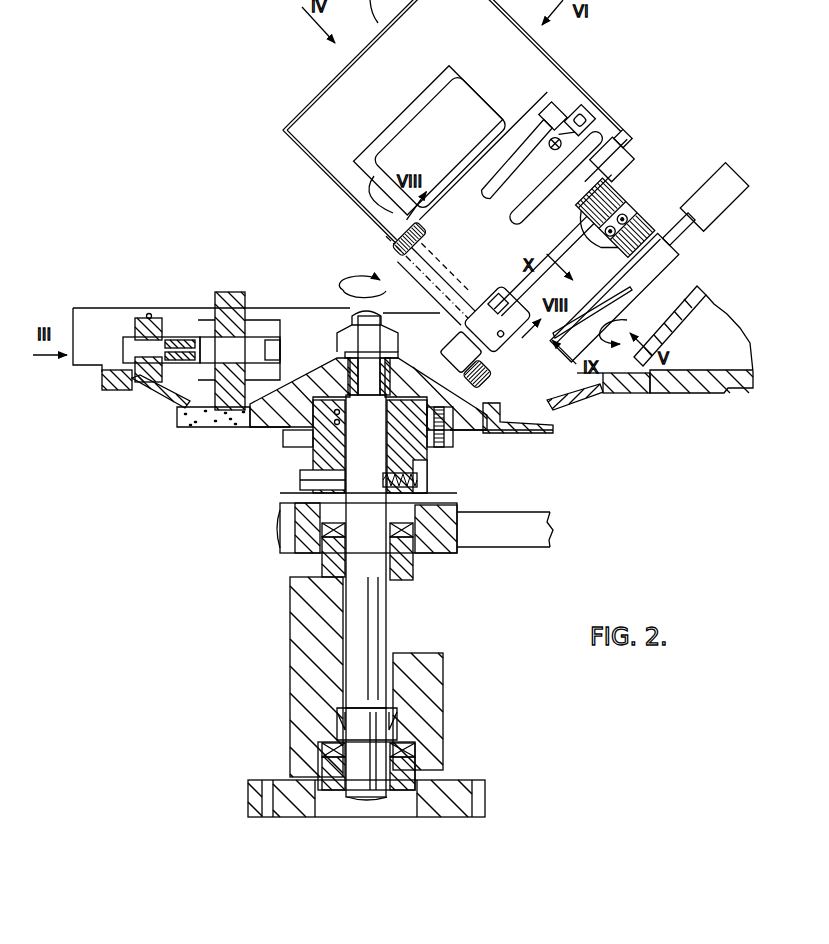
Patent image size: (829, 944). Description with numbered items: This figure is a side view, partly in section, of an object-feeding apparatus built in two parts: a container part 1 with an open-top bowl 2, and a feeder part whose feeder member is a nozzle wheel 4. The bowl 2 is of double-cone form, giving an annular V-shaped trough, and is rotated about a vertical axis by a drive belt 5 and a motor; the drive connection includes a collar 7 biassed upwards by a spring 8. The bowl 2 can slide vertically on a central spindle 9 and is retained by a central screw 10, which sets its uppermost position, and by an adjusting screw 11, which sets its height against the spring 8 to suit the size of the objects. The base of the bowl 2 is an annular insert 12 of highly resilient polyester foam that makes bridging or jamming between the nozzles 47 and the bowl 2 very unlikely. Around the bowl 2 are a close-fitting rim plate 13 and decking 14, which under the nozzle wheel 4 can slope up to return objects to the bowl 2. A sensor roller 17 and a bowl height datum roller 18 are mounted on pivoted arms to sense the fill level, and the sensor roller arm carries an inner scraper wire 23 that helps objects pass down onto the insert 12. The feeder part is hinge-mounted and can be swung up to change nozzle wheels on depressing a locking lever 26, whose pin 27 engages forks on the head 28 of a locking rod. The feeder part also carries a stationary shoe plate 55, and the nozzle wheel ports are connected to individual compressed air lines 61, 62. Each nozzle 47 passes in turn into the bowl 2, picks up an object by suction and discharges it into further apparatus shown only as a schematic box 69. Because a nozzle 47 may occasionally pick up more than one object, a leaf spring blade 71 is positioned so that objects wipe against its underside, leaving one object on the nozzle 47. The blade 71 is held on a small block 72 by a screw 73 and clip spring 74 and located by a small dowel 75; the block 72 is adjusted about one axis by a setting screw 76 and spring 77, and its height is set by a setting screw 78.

The container part 1 is at (78, 374).
The bowl 2 is at (160, 393).
The nozzle wheel 4 is at (653, 259).
The drive belt 5 is at (493, 543).
The collar 7 is at (300, 440).
The spring 8 is at (340, 457).
The central spindle 9 is at (355, 503).
The central screw 10 is at (350, 283).
The adjusting screw 11 is at (340, 347).
The annular insert 12 is at (197, 430).
The rim plate 13 is at (613, 397).
The decking 14 is at (703, 373).
The sensor roller 17 is at (218, 292).
The bowl height datum roller 18 is at (146, 318).
The inner scraper wire 23 is at (273, 378).
The locking lever 26 is at (497, 200).
The pin 27 is at (560, 137).
The head 28 is at (583, 97).
The nozzle 47 is at (689, 233).
The shoe plate 55 is at (613, 233).
The compressed air line 61 is at (623, 213).
The compressed air line 62 is at (598, 235).
The schematic box 69 is at (717, 197).
The leaf spring blade 71 is at (627, 293).
The small block 72 is at (482, 320).
The screw 73 is at (543, 430).
The clip spring 74 is at (560, 400).
The small dowel 75 is at (510, 330).
The setting screw 76 is at (470, 407).
The spring 77 is at (450, 410).
The setting screw 78 is at (396, 244).